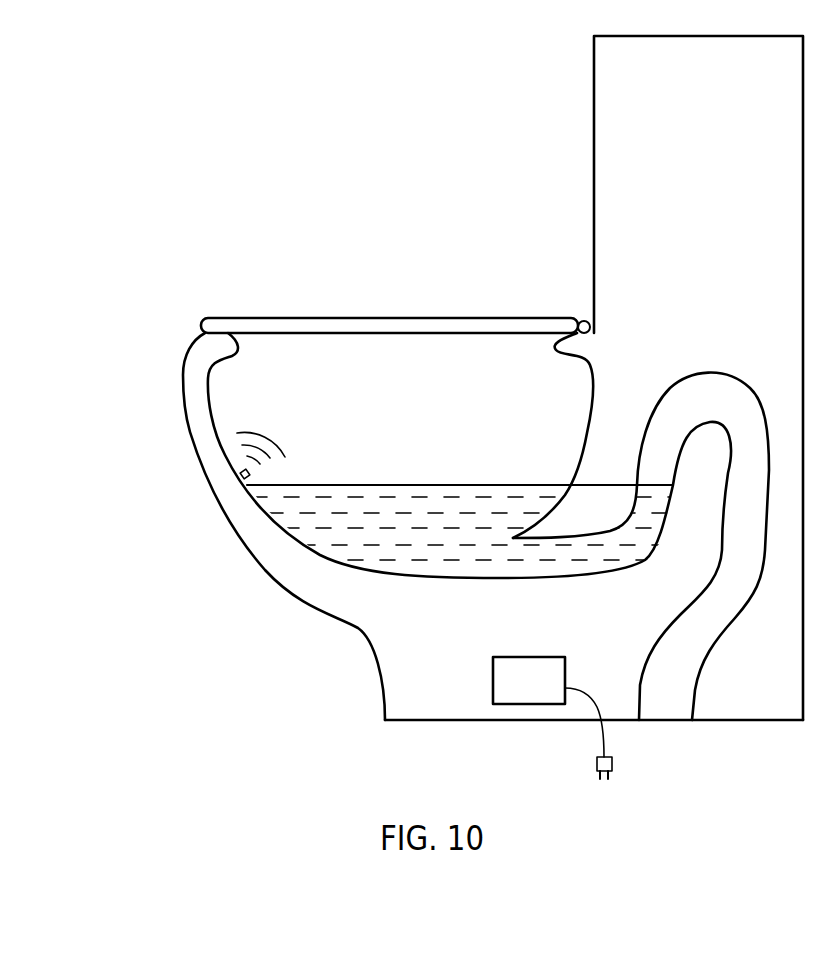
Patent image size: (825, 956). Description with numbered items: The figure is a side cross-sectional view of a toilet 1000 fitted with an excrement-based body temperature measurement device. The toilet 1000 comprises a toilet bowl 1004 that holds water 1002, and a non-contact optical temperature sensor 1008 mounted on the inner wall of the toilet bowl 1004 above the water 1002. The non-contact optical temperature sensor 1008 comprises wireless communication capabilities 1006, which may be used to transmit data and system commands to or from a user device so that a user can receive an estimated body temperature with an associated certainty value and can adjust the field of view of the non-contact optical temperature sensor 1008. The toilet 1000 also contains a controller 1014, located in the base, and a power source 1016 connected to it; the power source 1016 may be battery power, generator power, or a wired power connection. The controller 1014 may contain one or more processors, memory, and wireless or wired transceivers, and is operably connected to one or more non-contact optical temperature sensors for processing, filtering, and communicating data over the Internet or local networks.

The toilet 1000 is at (735, 145).
The water 1002 is at (457, 548).
The toilet bowl 1004 is at (213, 403).
The wireless communication capabilities 1006 is at (247, 432).
The non-contact optical temperature sensor 1008 is at (253, 478).
The controller 1014 is at (516, 695).
The power source 1016 is at (613, 768).